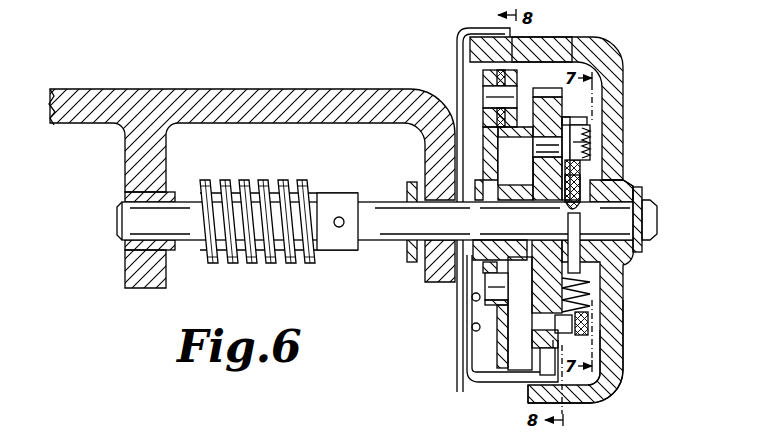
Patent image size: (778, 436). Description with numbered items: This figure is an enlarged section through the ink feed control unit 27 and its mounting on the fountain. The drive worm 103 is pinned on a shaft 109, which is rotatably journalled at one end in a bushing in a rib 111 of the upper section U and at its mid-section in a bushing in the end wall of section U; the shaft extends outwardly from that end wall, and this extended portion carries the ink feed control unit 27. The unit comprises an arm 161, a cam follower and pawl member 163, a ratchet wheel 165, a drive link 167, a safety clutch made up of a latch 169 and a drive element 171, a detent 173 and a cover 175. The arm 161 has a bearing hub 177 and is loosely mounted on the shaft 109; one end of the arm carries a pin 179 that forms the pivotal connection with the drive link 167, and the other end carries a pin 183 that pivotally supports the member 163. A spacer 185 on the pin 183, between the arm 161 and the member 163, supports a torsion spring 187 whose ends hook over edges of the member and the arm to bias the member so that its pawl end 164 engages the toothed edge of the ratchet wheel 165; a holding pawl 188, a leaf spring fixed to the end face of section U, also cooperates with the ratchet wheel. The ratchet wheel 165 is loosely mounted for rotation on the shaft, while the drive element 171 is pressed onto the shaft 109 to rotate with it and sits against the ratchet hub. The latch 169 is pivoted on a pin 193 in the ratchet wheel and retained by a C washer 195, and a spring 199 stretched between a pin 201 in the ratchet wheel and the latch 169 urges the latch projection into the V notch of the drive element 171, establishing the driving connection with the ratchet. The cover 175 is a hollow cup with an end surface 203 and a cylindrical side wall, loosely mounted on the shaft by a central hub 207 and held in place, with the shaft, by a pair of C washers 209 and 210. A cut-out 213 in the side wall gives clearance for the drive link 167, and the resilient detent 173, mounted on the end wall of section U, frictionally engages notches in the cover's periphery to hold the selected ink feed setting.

The ink feed control unit 27 is at (640, 292).
The upper section U is at (233, 96).
The drive worm 103 is at (300, 182).
The shaft 109 is at (183, 241).
The rib 111 is at (125, 257).
The arm 161 is at (497, 311).
The cam follower and pawl member 163 is at (512, 66).
The pawl end 164 is at (548, 103).
The ratchet wheel 165 is at (585, 40).
The drive link 167 is at (495, 363).
The latch 169 is at (590, 156).
The drive element 171 is at (583, 265).
The detent 173 is at (461, 28).
The cover 175 is at (615, 396).
The bearing hub 177 is at (512, 186).
The pin 179 is at (487, 284).
The pin 183 is at (484, 98).
The spacer 185 is at (484, 118).
The torsion spring 187 is at (484, 78).
The holding pawl 188 is at (600, 405).
The pin 193 is at (585, 140).
The C washer 195 is at (590, 128).
The spring 199 is at (593, 299).
The pin 201 is at (590, 329).
The end surface 203 is at (618, 373).
The hub 207 is at (630, 187).
The C washer 209 is at (408, 253).
The C washer 210 is at (642, 247).
The cut-out 213 is at (528, 394).